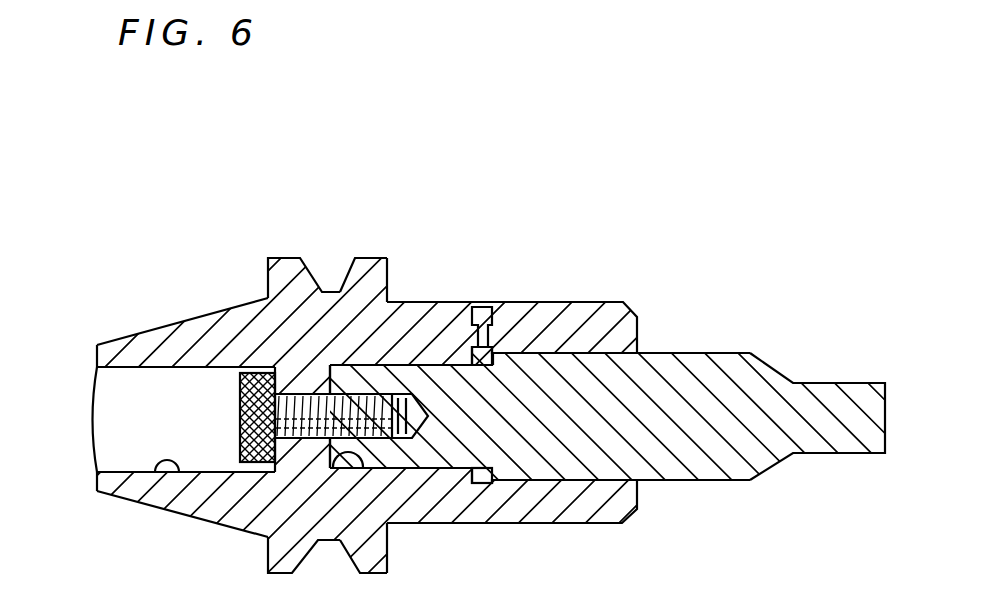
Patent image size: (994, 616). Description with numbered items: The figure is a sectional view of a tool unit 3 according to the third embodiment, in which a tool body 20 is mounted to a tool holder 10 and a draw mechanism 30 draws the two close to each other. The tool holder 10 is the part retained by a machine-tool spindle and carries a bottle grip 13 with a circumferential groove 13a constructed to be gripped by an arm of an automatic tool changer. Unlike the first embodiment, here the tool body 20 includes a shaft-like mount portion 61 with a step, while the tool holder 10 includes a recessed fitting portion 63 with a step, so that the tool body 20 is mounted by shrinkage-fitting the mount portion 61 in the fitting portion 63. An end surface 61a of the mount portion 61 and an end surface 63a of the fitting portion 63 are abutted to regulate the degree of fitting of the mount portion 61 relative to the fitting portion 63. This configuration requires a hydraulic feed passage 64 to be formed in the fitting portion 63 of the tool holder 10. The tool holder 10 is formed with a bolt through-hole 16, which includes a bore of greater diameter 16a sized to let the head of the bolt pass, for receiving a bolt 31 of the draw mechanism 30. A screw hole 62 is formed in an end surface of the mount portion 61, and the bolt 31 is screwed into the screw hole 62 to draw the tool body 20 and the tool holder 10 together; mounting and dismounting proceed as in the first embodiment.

The tool unit 3 is at (582, 190).
The tool holder 10 is at (150, 331).
The bottle grip 13 is at (285, 273).
The circumferential groove 13a is at (327, 291).
The bolt through-hole 16 is at (133, 450).
The bore of greater diameter 16a is at (158, 463).
The tool body 20 is at (737, 350).
The draw mechanism 30 is at (236, 431).
The bolt 31 is at (318, 441).
The shaft-like mount portion 61 is at (705, 484).
The end surface of mount portion 61a is at (390, 261).
The screw hole 62 is at (402, 441).
The recessed fitting portion 63 is at (579, 318).
The end surface of fitting portion 63a is at (361, 468).
The hydraulic feed passage 64 is at (472, 333).